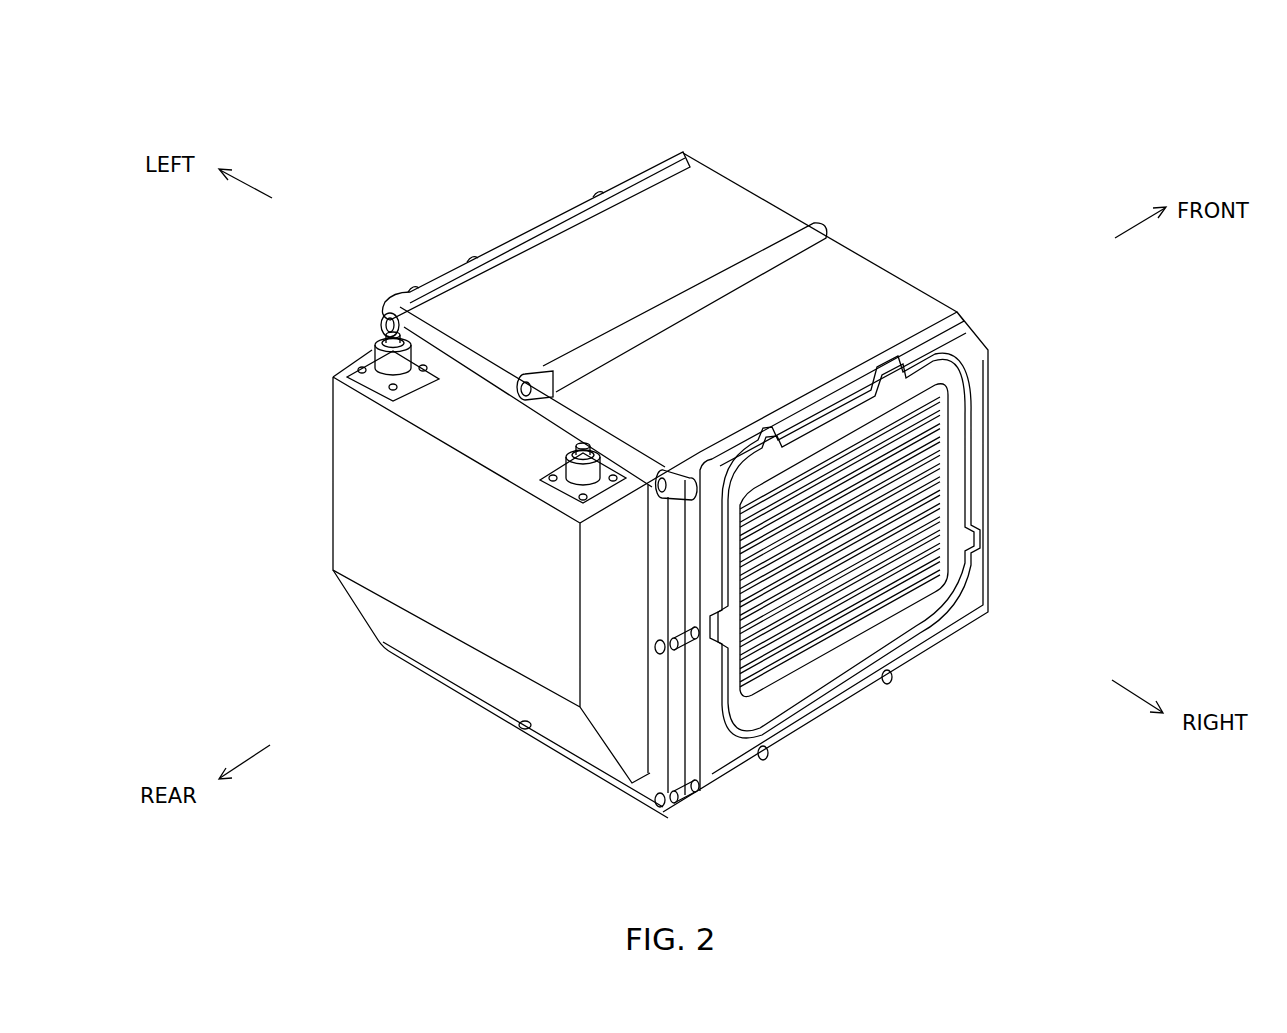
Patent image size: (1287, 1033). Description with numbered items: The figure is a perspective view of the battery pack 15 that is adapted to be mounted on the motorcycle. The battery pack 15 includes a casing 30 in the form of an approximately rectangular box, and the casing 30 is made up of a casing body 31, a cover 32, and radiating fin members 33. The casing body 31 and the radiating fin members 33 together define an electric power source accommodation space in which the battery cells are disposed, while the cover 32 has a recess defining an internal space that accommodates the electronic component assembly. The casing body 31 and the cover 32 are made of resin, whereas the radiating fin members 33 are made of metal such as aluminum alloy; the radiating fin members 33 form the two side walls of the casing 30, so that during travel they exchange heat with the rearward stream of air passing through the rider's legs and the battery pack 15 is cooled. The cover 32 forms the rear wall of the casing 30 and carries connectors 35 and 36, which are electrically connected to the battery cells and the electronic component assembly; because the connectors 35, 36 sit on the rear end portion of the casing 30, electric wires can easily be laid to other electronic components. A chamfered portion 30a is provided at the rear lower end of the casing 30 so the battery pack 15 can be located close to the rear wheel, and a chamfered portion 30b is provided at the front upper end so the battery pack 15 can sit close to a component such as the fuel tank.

The battery pack 15 is at (608, 122).
The casing 30 is at (714, 157).
The chamfered portion 30a is at (566, 737).
The chamfered portion 30b is at (977, 332).
The casing body 31 is at (851, 250).
The cover 32 is at (345, 515).
The radiating fin members 33 is at (498, 240).
The connector 35 is at (380, 333).
The connector 36 is at (598, 454).